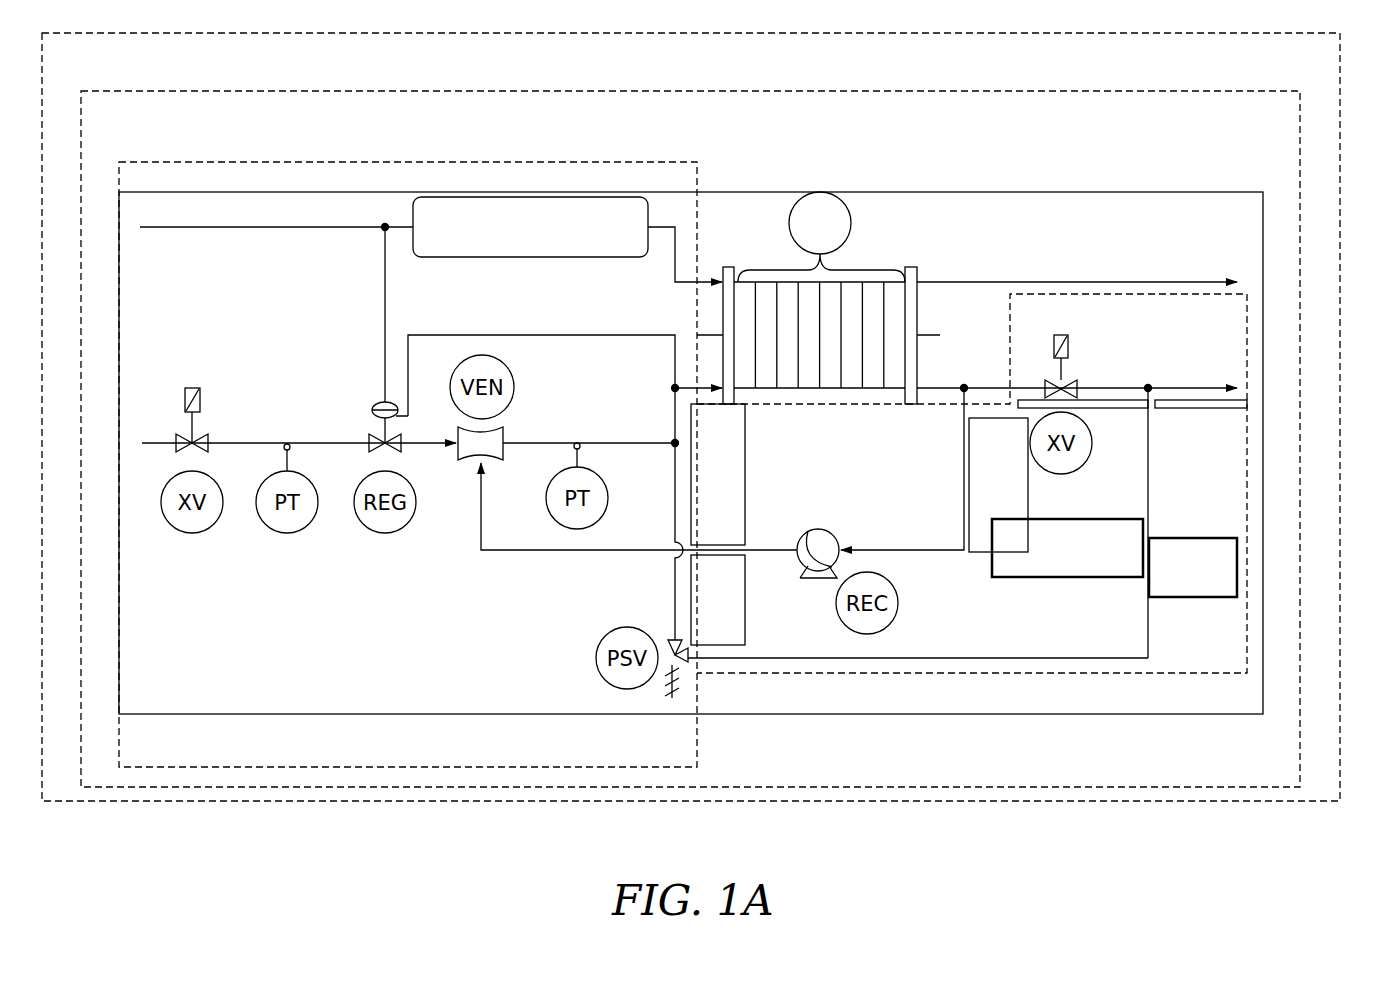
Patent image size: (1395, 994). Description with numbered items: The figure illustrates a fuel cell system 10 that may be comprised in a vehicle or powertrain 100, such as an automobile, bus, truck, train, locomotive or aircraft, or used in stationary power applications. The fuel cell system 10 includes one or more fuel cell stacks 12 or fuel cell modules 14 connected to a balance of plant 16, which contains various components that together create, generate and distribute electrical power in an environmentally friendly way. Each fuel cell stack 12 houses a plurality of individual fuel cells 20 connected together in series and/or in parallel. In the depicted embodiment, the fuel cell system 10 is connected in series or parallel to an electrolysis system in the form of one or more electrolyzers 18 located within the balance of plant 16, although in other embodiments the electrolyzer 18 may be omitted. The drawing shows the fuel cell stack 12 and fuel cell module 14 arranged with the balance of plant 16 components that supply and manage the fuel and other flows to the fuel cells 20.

The vehicle 100 is at (1344, 136).
The fuel cell system 10 is at (1304, 228).
The balance of plant 16 is at (441, 160).
The fuel cell stack 12 is at (818, 253).
The fuel cell module 14 is at (734, 252).
The electrolyzer 18 is at (541, 268).
The fuel cell 20 is at (893, 278).